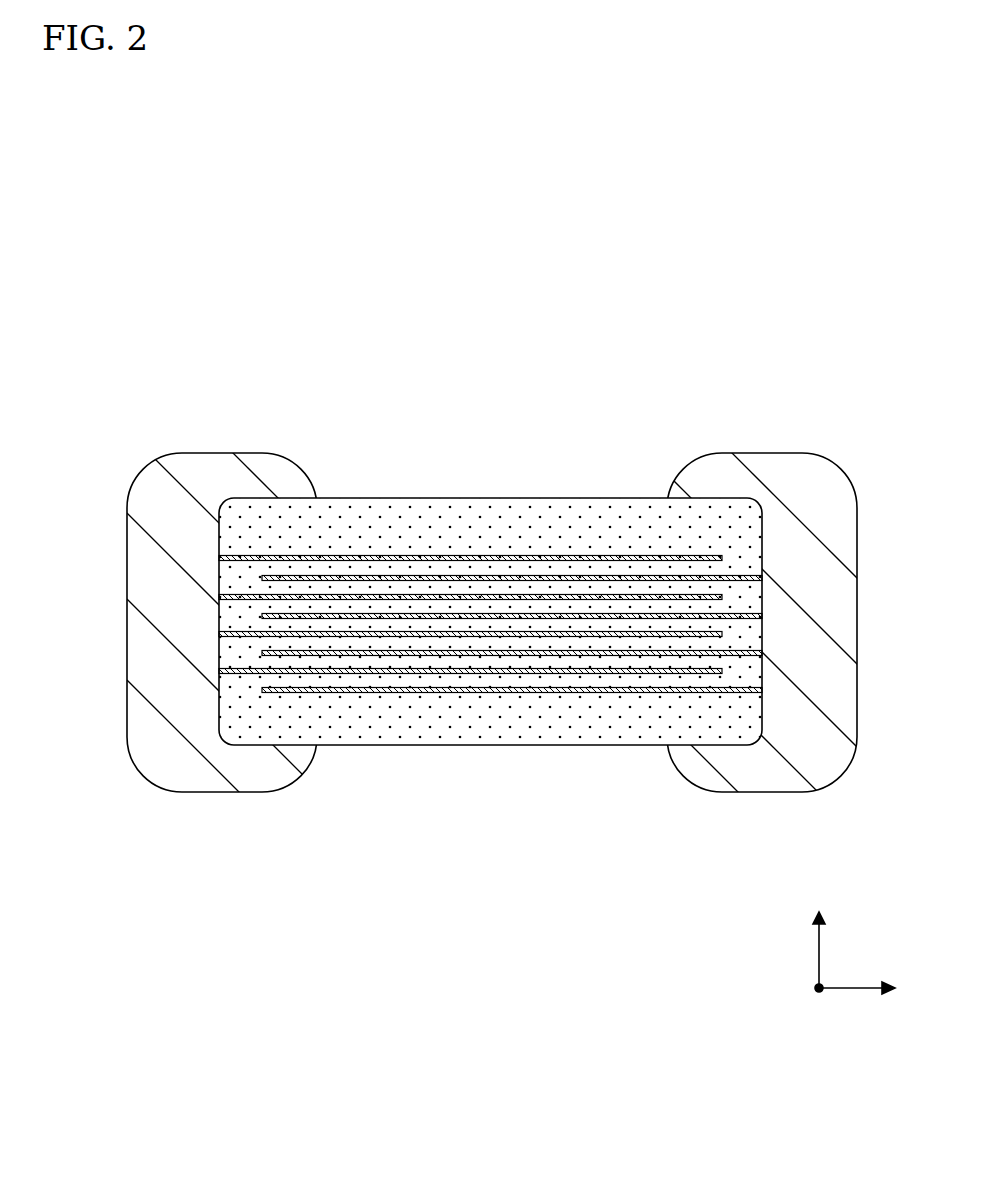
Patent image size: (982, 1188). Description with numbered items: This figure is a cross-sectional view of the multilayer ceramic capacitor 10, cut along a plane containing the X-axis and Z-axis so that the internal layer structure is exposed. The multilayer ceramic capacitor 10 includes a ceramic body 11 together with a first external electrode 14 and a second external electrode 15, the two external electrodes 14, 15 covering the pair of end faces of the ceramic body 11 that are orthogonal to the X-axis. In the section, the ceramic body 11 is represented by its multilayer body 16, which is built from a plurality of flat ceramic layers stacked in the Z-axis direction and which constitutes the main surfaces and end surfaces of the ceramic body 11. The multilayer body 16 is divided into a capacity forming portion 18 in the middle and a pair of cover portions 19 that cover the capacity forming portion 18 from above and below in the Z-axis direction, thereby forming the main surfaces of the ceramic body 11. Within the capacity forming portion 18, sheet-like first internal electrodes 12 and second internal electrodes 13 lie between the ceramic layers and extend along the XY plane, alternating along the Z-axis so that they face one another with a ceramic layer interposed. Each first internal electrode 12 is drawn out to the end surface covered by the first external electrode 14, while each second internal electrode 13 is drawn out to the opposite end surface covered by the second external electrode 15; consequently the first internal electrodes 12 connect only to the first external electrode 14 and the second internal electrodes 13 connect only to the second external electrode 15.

The multilayer ceramic capacitor 10 is at (152, 415).
The ceramic body 11 is at (527, 466).
The first internal electrode 12 is at (347, 668).
The second internal electrode 13 is at (575, 687).
The first external electrode 14 is at (147, 627).
The second external electrode 15 is at (850, 622).
The multilayer body 16 is at (466, 732).
The capacity forming portion 18 is at (769, 563).
The cover portion 19 is at (769, 500).